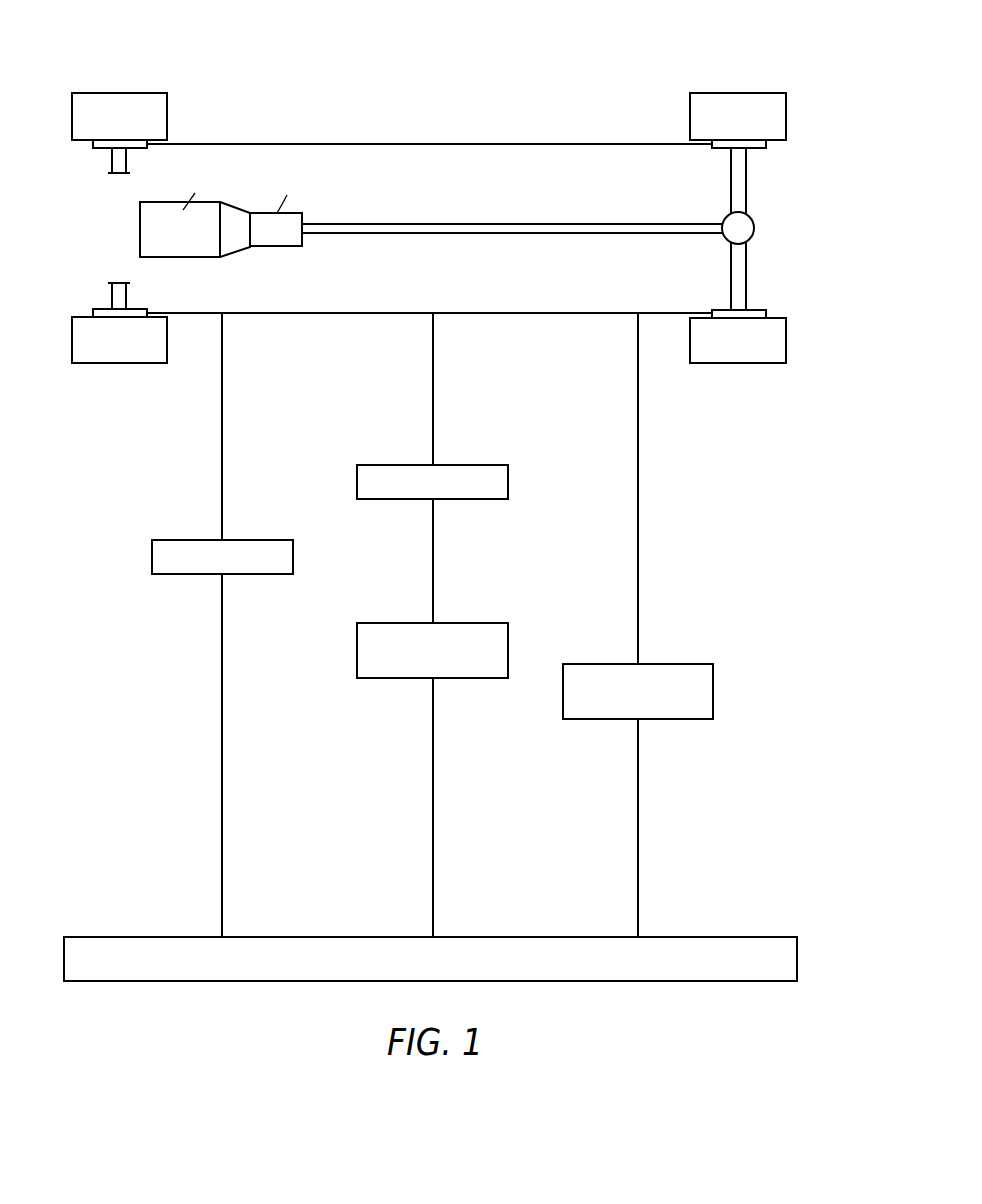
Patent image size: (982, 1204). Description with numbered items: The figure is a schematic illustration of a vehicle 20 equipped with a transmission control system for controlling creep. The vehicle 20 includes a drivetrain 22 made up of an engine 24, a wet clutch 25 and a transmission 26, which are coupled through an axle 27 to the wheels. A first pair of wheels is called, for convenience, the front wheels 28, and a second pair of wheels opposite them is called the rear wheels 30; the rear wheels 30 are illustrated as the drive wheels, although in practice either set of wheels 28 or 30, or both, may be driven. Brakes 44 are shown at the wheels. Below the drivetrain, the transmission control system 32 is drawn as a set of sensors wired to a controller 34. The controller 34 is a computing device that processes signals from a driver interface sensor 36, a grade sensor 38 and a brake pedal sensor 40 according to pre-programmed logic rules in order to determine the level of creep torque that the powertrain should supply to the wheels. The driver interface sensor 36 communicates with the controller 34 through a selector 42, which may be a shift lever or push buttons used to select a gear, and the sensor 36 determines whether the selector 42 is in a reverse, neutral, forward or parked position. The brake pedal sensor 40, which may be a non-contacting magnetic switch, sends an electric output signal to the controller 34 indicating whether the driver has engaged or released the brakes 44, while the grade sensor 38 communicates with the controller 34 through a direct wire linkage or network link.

The vehicle 20 is at (468, 62).
The drivetrain 22 is at (768, 228).
The engine 24 is at (183, 210).
The wet clutch 25 is at (241, 202).
The transmission 26 is at (282, 211).
The axle 27 is at (428, 224).
The front wheels 28 is at (97, 97).
The rear wheels 30 is at (737, 98).
The transmission control system 32 is at (80, 565).
The controller 34 is at (765, 937).
The driver interface sensor 36 is at (464, 623).
The grade sensor 38 is at (253, 540).
The brake pedal sensor 40 is at (680, 664).
The selector 42 is at (464, 465).
The brakes 44 is at (103, 148).